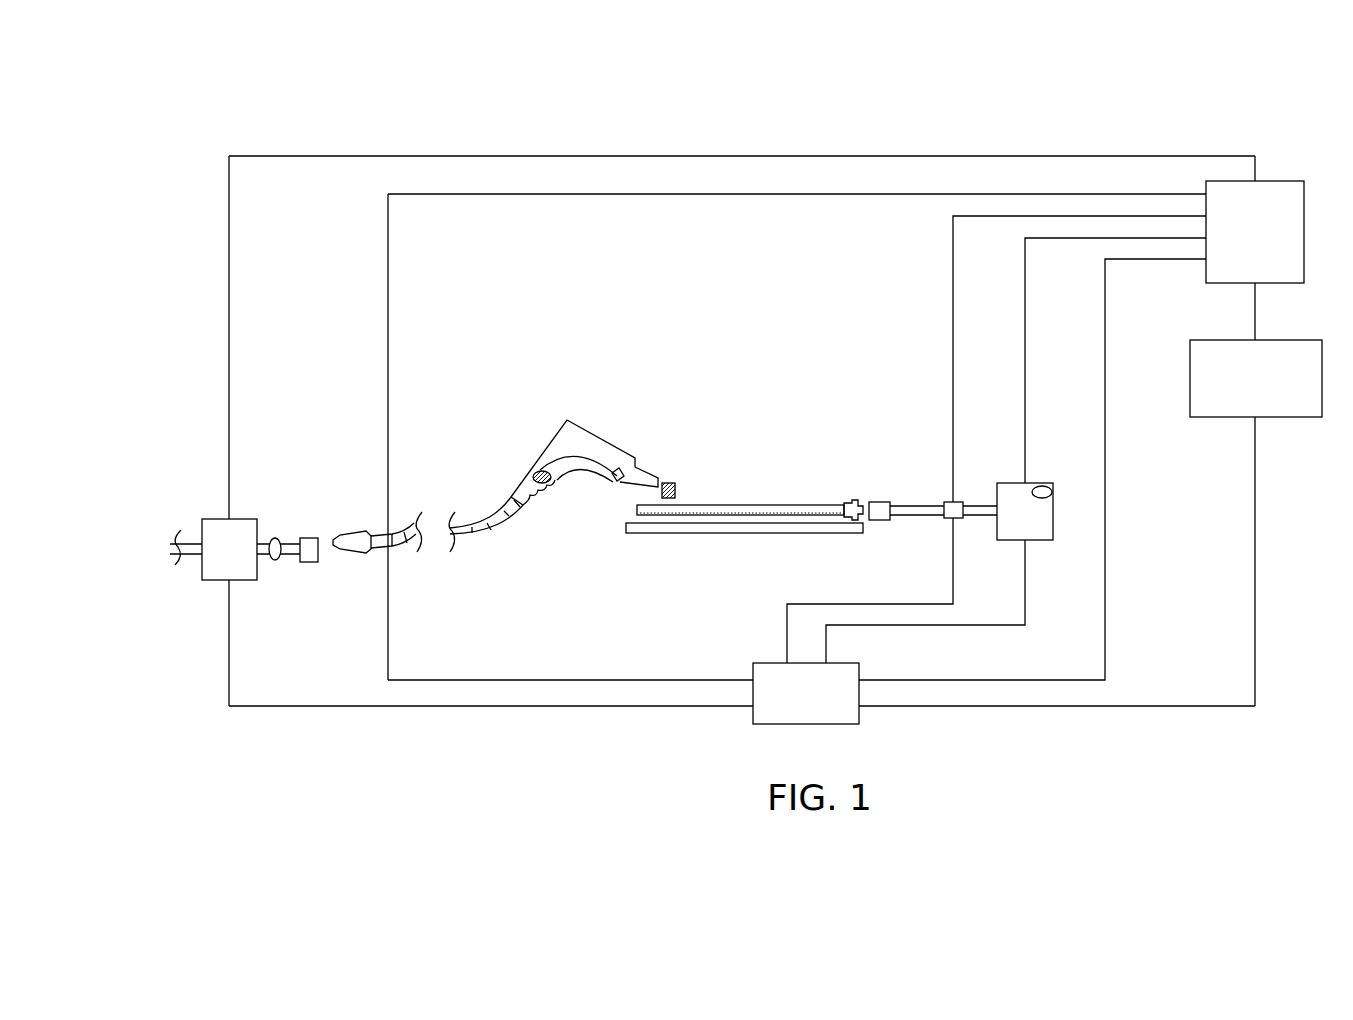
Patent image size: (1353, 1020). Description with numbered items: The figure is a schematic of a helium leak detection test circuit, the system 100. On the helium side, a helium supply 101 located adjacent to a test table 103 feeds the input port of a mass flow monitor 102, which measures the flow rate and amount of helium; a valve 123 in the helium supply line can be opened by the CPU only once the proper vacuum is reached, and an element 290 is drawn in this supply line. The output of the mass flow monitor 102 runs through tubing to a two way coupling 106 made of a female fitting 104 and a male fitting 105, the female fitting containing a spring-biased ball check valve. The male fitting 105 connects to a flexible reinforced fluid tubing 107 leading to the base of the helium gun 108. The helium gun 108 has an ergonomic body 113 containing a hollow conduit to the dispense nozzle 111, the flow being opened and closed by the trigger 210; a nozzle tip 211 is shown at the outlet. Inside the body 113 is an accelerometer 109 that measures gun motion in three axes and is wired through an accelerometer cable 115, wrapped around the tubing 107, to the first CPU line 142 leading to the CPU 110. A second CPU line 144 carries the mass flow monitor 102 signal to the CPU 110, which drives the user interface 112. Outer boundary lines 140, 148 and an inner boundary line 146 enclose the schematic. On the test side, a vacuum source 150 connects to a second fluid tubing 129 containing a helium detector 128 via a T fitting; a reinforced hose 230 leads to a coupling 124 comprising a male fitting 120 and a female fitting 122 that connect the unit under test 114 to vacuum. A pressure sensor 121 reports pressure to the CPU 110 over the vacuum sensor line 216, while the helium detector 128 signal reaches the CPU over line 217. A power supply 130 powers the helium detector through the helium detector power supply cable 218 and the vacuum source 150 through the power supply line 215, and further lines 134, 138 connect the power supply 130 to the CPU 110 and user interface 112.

The system 100 is at (220, 103).
The helium supply 101 is at (142, 552).
The mass flow monitor 102 is at (212, 563).
The test table 103 is at (676, 534).
The female fitting 104 is at (310, 563).
The male fitting 105 is at (356, 554).
The two way coupling 106 is at (364, 516).
The fluid tubing 107 is at (487, 537).
The helium gun 108 is at (606, 453).
The accelerometer 109 is at (540, 473).
The CPU 110 is at (1238, 246).
The dispense nozzle 111 is at (655, 478).
The user interface 112 is at (1239, 393).
The body 113 is at (565, 442).
The unit under test 114 is at (796, 466).
The accelerometer cable 115 is at (502, 523).
The male fitting 120 is at (850, 500).
The pressure sensor 121 is at (1042, 486).
The female fitting 122 is at (881, 501).
The valve 123 is at (278, 561).
The coupling 124 is at (897, 539).
The helium detector 128 is at (953, 501).
The second fluid tubing 129 is at (980, 519).
The power supply 130 is at (789, 705).
The communication line 134 is at (1105, 627).
The communication line 138 is at (1255, 627).
The system boundary 140 is at (770, 156).
The first CPU line 142 is at (388, 297).
The second CPU line 144 is at (229, 284).
The enclosure boundary 146 is at (388, 621).
The system boundary 148 is at (275, 706).
The vacuum source 150 is at (1008, 530).
The trigger 210 is at (573, 478).
The contact tip 211 is at (678, 490).
The power supply line 215 is at (826, 641).
The vacuum sensor line 216 is at (1025, 364).
The control line 217 is at (953, 362).
The helium detector power supply cable 218 is at (787, 625).
The reinforced hose 230 is at (917, 519).
The flow sensor 290 is at (283, 538).